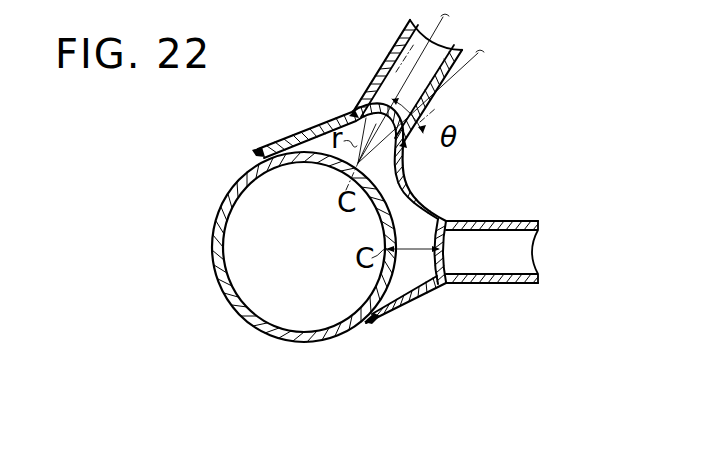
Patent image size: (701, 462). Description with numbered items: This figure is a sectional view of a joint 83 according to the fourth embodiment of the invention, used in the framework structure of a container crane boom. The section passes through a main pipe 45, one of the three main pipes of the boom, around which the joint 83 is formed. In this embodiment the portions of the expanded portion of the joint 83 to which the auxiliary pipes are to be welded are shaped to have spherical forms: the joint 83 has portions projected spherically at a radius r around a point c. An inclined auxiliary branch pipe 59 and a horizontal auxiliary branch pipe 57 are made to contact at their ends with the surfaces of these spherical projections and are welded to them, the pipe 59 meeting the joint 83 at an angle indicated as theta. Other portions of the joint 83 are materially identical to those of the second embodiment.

The main pipe 45 is at (238, 182).
The joint 83 is at (309, 128).
The auxiliary branch pipe 59 is at (383, 63).
The auxiliary branch pipe 57 is at (481, 284).